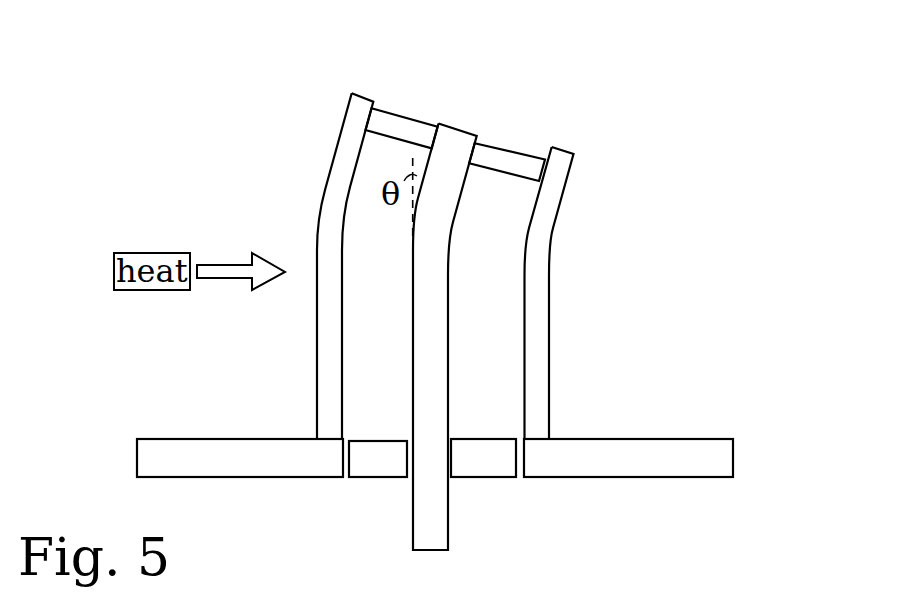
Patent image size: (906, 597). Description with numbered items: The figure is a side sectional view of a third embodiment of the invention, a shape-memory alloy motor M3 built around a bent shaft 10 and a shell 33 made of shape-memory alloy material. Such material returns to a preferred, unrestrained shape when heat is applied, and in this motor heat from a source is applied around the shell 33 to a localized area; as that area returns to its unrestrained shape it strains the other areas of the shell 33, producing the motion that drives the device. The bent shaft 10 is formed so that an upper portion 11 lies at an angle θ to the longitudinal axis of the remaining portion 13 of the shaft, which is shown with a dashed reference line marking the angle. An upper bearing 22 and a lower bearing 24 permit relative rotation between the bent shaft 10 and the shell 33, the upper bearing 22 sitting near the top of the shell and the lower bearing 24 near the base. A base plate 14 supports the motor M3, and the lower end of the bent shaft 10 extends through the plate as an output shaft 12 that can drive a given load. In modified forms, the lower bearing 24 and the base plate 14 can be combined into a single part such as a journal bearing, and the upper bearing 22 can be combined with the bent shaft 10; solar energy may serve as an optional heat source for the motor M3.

The bent shaft 10 is at (475, 102).
The portion at angle θ 11 is at (443, 190).
The output shaft 12 is at (436, 508).
The remaining portion 13 is at (437, 339).
The base plate 14 is at (238, 457).
The upper bearing 22 is at (408, 131).
The lower bearing 24 is at (371, 453).
The shell 33 is at (338, 187).
The shape-memory alloy motor M3 is at (642, 190).